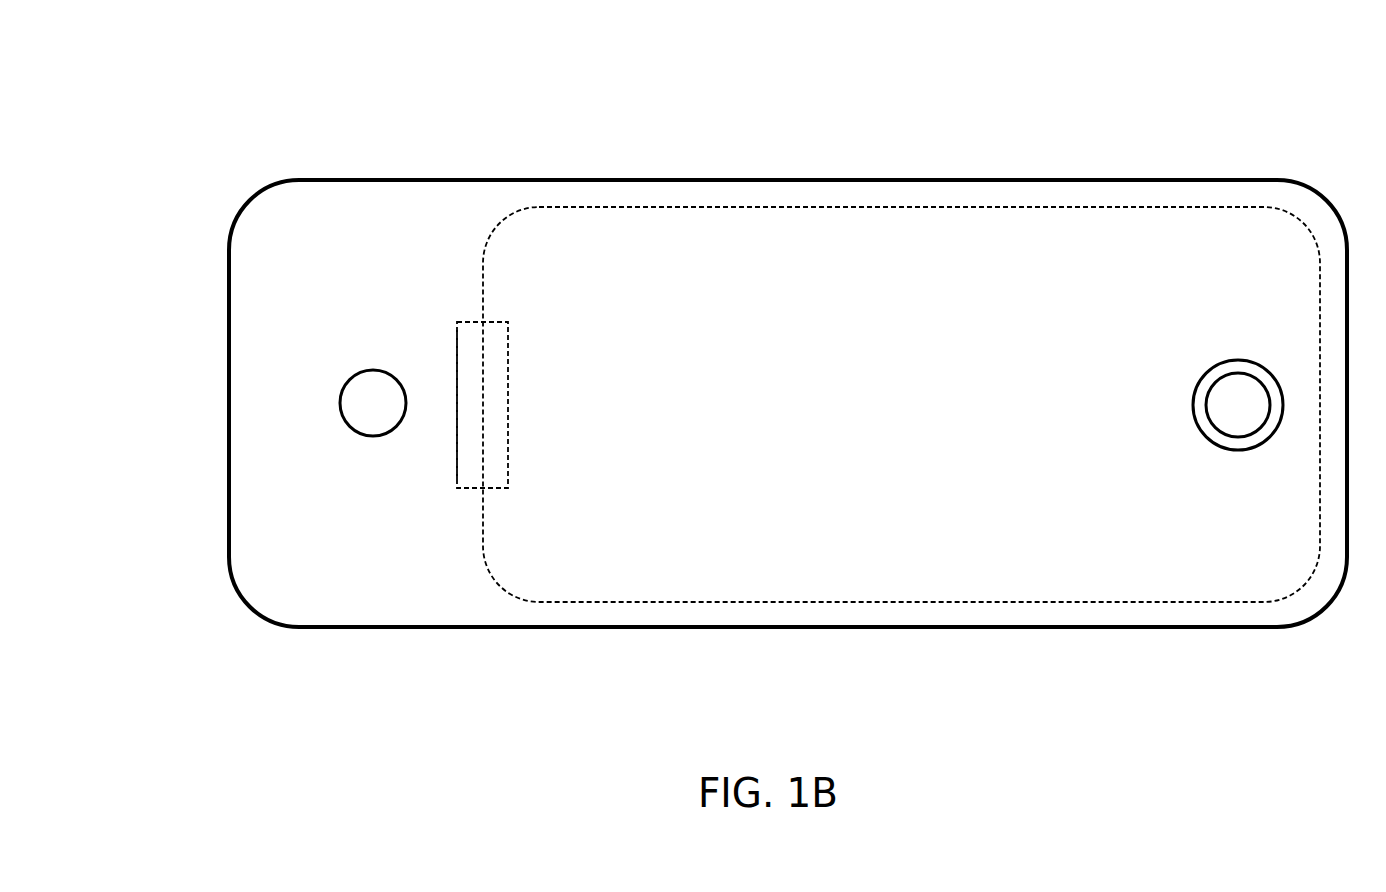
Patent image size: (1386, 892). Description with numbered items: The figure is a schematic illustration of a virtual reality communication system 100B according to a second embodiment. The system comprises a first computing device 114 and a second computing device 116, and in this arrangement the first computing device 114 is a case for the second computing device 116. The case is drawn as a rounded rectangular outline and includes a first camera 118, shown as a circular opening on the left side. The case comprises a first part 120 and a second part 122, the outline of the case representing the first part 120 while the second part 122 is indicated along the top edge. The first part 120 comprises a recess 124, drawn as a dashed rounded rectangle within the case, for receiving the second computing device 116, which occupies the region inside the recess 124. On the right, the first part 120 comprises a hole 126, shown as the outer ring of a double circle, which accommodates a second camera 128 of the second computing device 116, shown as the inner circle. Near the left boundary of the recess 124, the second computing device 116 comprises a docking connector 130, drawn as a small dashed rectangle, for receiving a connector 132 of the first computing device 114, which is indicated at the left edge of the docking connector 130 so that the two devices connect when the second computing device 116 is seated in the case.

The virtual reality communication system 100B is at (196, 104).
The first computing device 114 is at (374, 245).
The second computing device 116 is at (951, 245).
The first camera 118 is at (374, 437).
The first part 120 is at (879, 179).
The second part 122 is at (333, 179).
The recess 124 is at (1048, 207).
The hole 126 is at (1153, 538).
The second camera 128 is at (1238, 400).
The docking connector 130 is at (606, 519).
The connector 132 is at (568, 270).